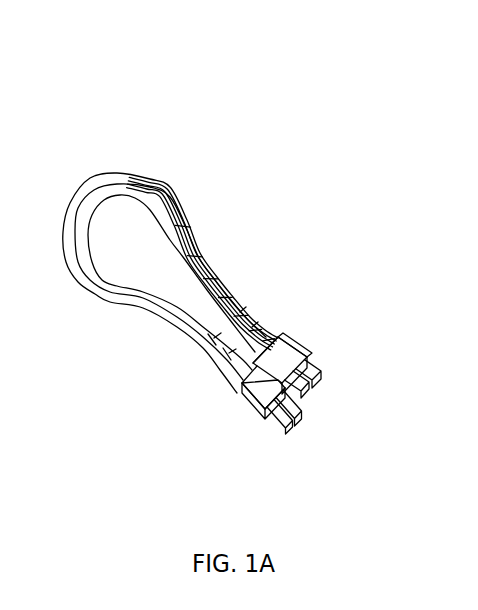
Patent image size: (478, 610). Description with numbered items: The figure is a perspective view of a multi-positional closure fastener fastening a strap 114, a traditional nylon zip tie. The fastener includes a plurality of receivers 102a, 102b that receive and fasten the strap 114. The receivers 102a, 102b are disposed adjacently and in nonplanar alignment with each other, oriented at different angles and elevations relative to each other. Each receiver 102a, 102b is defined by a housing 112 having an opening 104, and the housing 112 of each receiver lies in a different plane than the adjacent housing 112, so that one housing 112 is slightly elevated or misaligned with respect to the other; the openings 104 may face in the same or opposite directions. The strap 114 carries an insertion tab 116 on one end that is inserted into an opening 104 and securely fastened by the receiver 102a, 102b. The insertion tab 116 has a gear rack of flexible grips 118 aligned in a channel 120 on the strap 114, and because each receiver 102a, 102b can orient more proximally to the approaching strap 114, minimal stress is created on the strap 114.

The receiver 102a is at (339, 334).
The receiver 102b is at (254, 414).
The opening 104 is at (314, 369).
The housing 112 is at (301, 343).
The strap 114 is at (84, 190).
The insertion tab 116 is at (322, 388).
The flexible grips 118 is at (242, 305).
The channel 120 is at (165, 210).